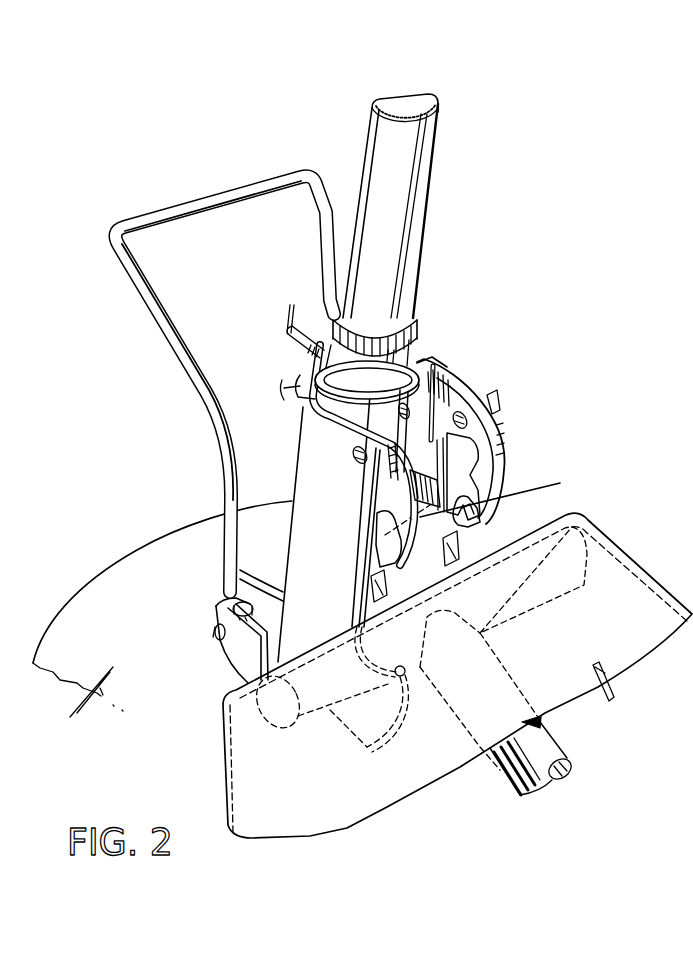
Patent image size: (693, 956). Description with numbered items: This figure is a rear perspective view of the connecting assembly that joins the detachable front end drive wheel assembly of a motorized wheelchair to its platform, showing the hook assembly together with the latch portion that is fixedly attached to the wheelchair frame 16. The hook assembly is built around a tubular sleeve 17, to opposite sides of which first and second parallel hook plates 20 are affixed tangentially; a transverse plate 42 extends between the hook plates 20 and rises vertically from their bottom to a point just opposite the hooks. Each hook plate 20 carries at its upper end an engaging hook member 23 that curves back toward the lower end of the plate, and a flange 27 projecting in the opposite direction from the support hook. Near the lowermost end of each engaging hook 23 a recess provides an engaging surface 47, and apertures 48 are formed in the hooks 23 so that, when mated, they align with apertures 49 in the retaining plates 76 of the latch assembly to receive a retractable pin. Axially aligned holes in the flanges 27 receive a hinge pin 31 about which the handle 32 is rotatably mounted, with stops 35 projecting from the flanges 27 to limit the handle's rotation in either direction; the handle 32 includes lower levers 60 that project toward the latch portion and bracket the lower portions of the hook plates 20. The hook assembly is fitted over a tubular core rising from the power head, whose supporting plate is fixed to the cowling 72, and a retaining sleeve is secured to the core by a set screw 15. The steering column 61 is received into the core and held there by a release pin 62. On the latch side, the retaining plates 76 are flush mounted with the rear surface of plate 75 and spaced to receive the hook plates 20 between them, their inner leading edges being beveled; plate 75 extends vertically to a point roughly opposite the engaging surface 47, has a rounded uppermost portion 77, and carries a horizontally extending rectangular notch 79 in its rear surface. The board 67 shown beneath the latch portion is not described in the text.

The set screw 15 is at (300, 384).
The wheelchair frame 16 is at (546, 746).
The tubular sleeve 17 is at (400, 437).
The hook plates 20 is at (311, 412).
The engaging hook member 23 is at (492, 458).
The flange 27 is at (265, 610).
The hinge pin 31 is at (213, 630).
The handle 32 is at (160, 211).
The stops 35 is at (229, 596).
The transverse plate 42 is at (433, 503).
The engaging surface 47 is at (395, 545).
The apertures 48 is at (452, 410).
The apertures 49 is at (360, 465).
The lower levers 60 is at (240, 656).
The steering column 61 is at (428, 192).
The release pin 62 is at (276, 335).
The board 67 is at (607, 542).
The cowling 72 is at (148, 618).
The plate 75 is at (376, 603).
The retaining plates 76 is at (318, 452).
The rounded uppermost portion 77 is at (470, 517).
The notch 79 is at (371, 592).